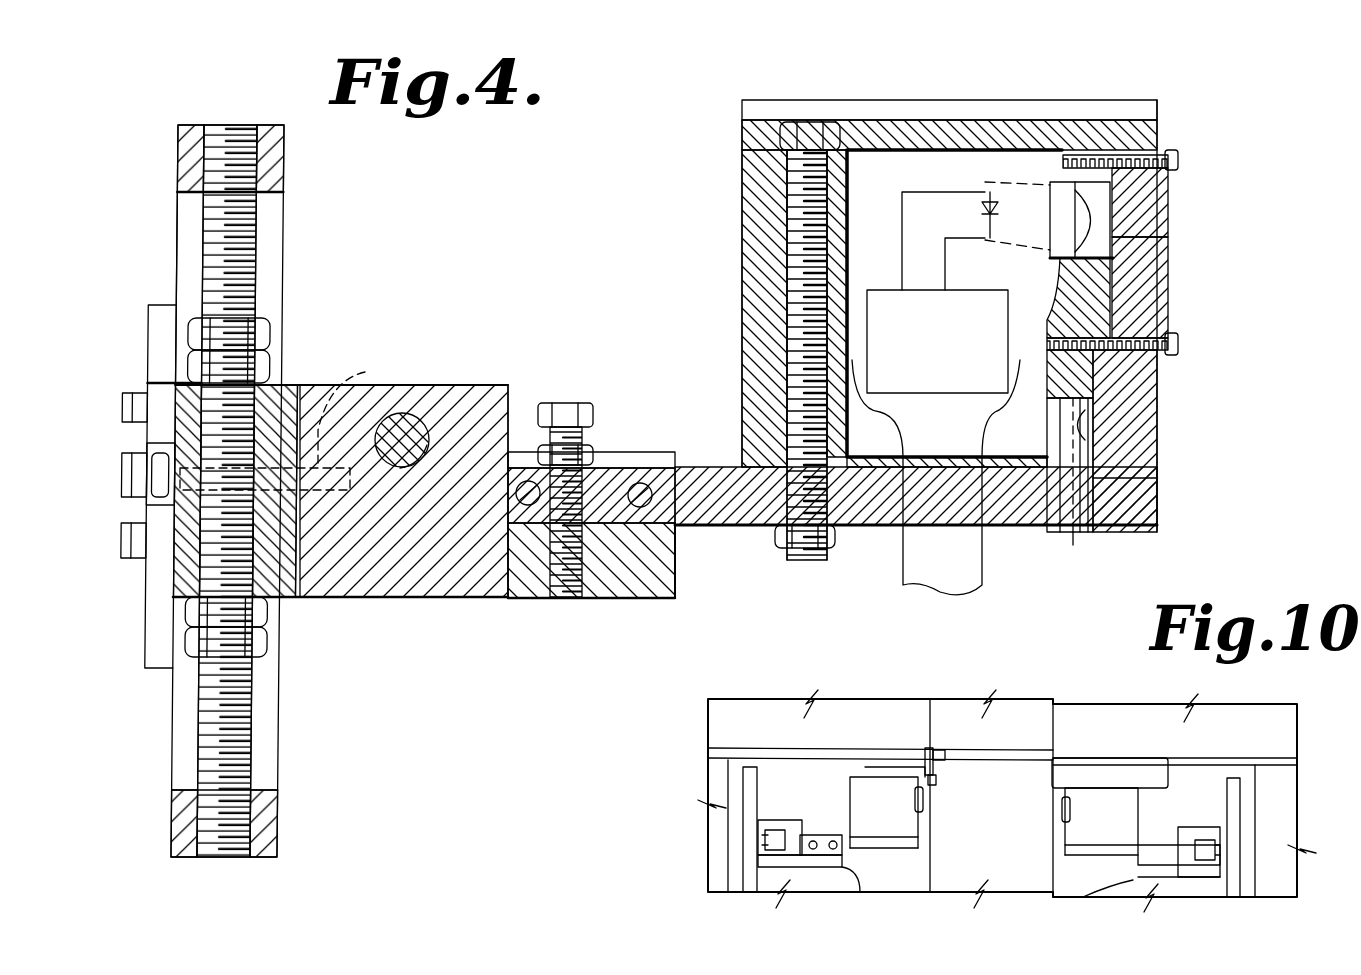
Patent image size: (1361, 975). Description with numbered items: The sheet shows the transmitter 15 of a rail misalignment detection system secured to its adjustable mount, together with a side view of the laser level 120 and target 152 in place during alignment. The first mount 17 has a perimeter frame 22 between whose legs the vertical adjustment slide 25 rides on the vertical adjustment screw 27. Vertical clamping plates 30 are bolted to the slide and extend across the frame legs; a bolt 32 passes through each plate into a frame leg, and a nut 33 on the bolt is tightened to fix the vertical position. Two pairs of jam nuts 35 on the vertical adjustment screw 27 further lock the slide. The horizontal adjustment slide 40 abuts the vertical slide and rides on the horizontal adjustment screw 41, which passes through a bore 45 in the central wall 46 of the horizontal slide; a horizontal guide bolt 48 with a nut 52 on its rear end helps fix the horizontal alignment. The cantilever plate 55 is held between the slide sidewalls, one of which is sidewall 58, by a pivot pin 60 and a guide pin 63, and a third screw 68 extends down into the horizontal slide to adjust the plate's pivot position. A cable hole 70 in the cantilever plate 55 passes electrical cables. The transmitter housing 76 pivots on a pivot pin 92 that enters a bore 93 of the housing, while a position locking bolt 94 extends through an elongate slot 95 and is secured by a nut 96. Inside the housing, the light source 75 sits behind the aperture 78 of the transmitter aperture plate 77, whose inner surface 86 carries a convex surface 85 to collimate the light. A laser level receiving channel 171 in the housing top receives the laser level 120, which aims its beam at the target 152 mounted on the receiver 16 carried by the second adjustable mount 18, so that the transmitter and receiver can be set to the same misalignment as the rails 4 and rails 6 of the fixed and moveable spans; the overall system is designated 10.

In FIG. 4, the perimeter frame 22 is at (182, 125).
In FIG. 4, the vertical adjustment screw 27 is at (205, 225).
In FIG. 4, the vertical clamping plate 30 is at (160, 305).
In FIG. 4, the vertical adjustment slide 25 is at (150, 383).
In FIG. 4, the bolt 32 is at (135, 440).
In FIG. 4, the nut 33 is at (135, 495).
In FIG. 4, the nut 52 is at (168, 505).
In FIG. 4, the jam nuts 35 is at (272, 375).
In FIG. 4, the horizontal guide bolt 48 is at (285, 421).
In FIG. 4, the horizontal adjustment screw 41 is at (410, 430).
In FIG. 4, the bore 45 is at (430, 435).
In FIG. 4, the horizontal adjustment slide 40 is at (505, 385).
In FIG. 4, the wall 46 is at (410, 543).
In FIG. 4, the guide pin 63 is at (527, 480).
In FIG. 4, the third screw 68 is at (572, 403).
In FIG. 4, the sidewall 58 is at (600, 452).
In FIG. 4, the pivot pin 60 is at (640, 483).
In FIG. 4, the rails 6 is at (591, 580).
In FIG. 10, the rails 6 is at (708, 720).
In FIG. 4, the cantilever plate 55 is at (1158, 528).
In FIG. 4, the laser level receiving channel 171 is at (949, 75).
In FIG. 4, the transmitter 15 is at (1167, 97).
In FIG. 10, the transmitter 15 is at (1102, 820).
In FIG. 4, the transmitter housing 76 is at (750, 165).
In FIG. 4, the position locking bolt 94 is at (800, 305).
In FIG. 4, the nut 96 is at (835, 548).
In FIG. 4, the elongate slot 95 is at (790, 495).
In FIG. 4, the light source 75 is at (975, 200).
In FIG. 4, the cable hole 70 is at (982, 520).
In FIG. 4, the aperture 78 is at (1160, 232).
In FIG. 4, the transmitter aperture plate 77 is at (1168, 318).
In FIG. 4, the convex surface 85 is at (1120, 250).
In FIG. 4, the inner surface 86 is at (1060, 265).
In FIG. 4, the bore 93 is at (1085, 445).
In FIG. 4, the pivot pin 92 is at (1075, 532).
In FIG. 10, the apparatus 10 is at (998, 870).
In FIG. 10, the rails 4 is at (1290, 738).
In FIG. 10, the receiver 16 is at (880, 817).
In FIG. 10, the target 152 is at (964, 785).
In FIG. 10, the second adjustable mount 18 is at (860, 893).
In FIG. 10, the laser level 120 is at (1052, 768).
In FIG. 10, the first adjustable mount 17 is at (1083, 897).